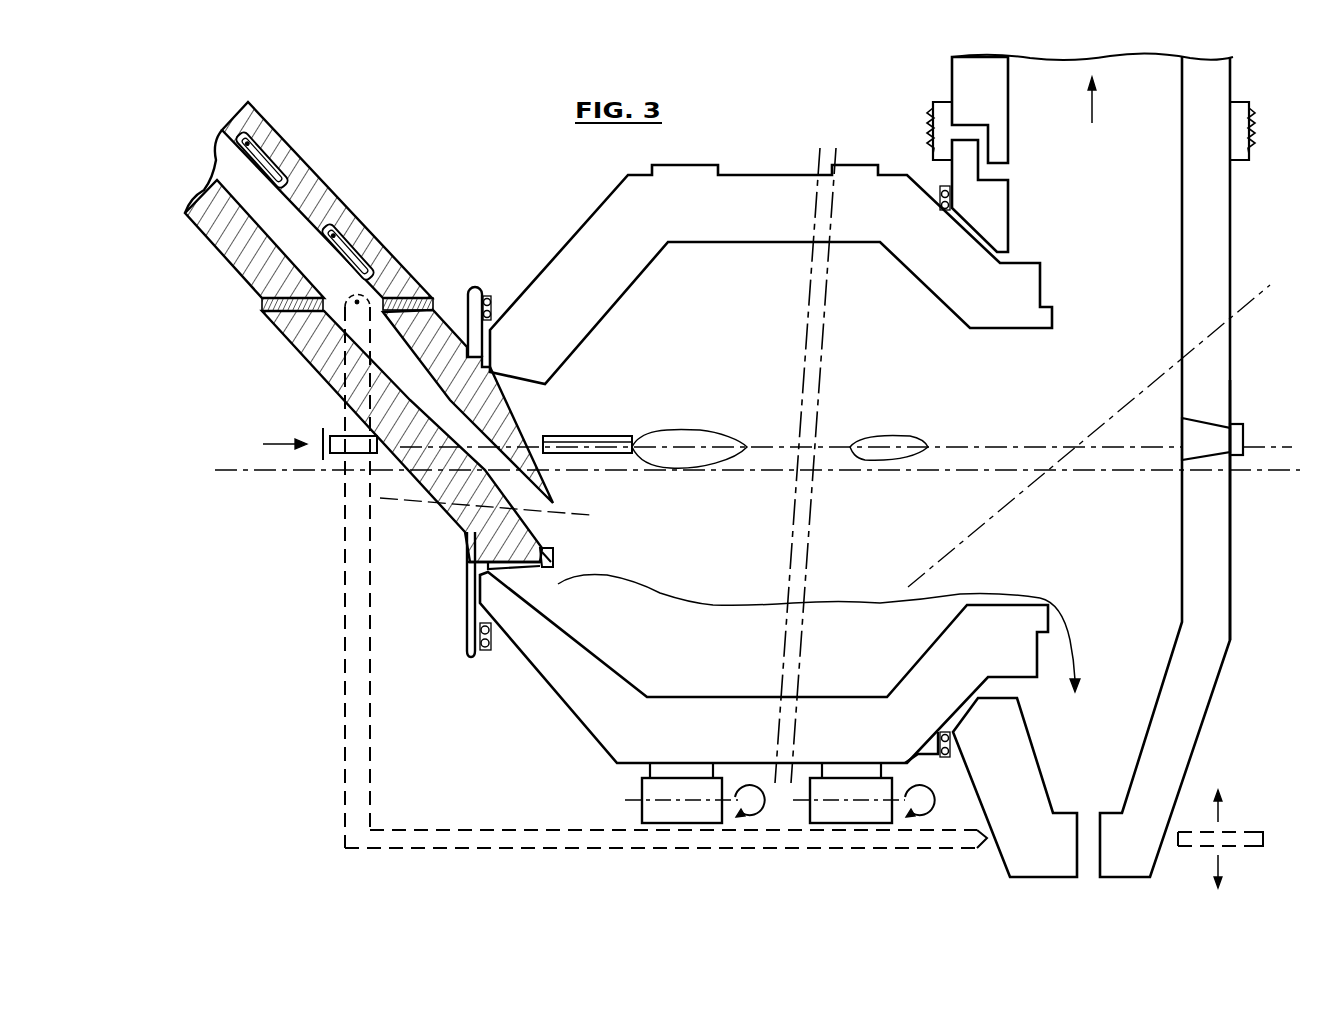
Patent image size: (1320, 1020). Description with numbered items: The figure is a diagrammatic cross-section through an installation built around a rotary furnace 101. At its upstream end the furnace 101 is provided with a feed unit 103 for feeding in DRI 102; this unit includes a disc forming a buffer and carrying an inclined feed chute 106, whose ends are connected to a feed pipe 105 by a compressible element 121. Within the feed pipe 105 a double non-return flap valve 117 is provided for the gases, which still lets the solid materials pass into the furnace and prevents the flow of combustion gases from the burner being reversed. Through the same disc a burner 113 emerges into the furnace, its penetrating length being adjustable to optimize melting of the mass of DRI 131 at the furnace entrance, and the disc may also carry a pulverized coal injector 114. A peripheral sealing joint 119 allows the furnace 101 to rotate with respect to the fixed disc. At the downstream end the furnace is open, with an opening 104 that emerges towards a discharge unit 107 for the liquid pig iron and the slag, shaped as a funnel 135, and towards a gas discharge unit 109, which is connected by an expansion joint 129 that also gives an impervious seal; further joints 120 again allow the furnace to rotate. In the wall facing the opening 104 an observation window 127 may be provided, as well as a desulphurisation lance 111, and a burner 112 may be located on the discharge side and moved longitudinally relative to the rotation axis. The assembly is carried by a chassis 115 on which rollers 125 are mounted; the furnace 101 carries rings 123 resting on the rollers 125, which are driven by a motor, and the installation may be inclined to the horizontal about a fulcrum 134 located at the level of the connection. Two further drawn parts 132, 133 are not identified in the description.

The rotary furnace 101 is at (771, 274).
The DRI 102 is at (257, 197).
The feed unit 103 is at (467, 533).
The opening 104 is at (766, 660).
The feed pipe 105 is at (314, 188).
The inclined feed chute 106 is at (323, 334).
The discharge unit 107 is at (1236, 578).
The gas discharge unit 109 is at (1195, 92).
The desulphurisation lance 111 is at (1105, 416).
The burner 112 is at (804, 441).
The burner 113 is at (580, 440).
The pulverized coal injector 114 is at (513, 515).
The chassis 115 is at (343, 586).
The double non-return flap valve 117 is at (334, 241).
The peripheral sealing joint 119 is at (483, 616).
The joints 120 is at (973, 751).
The compressible element 121 is at (260, 300).
The rings 123 is at (674, 770).
The rollers 125 is at (650, 808).
The observation window 127 is at (1212, 439).
The expansion joint 129 is at (915, 131).
The mass of DRI 131 is at (799, 600).
The flow direction arrow 132 is at (1082, 645).
The cover block 133 is at (1008, 154).
The fulcrum 134 is at (430, 239).
The funnel 135 is at (1040, 800).